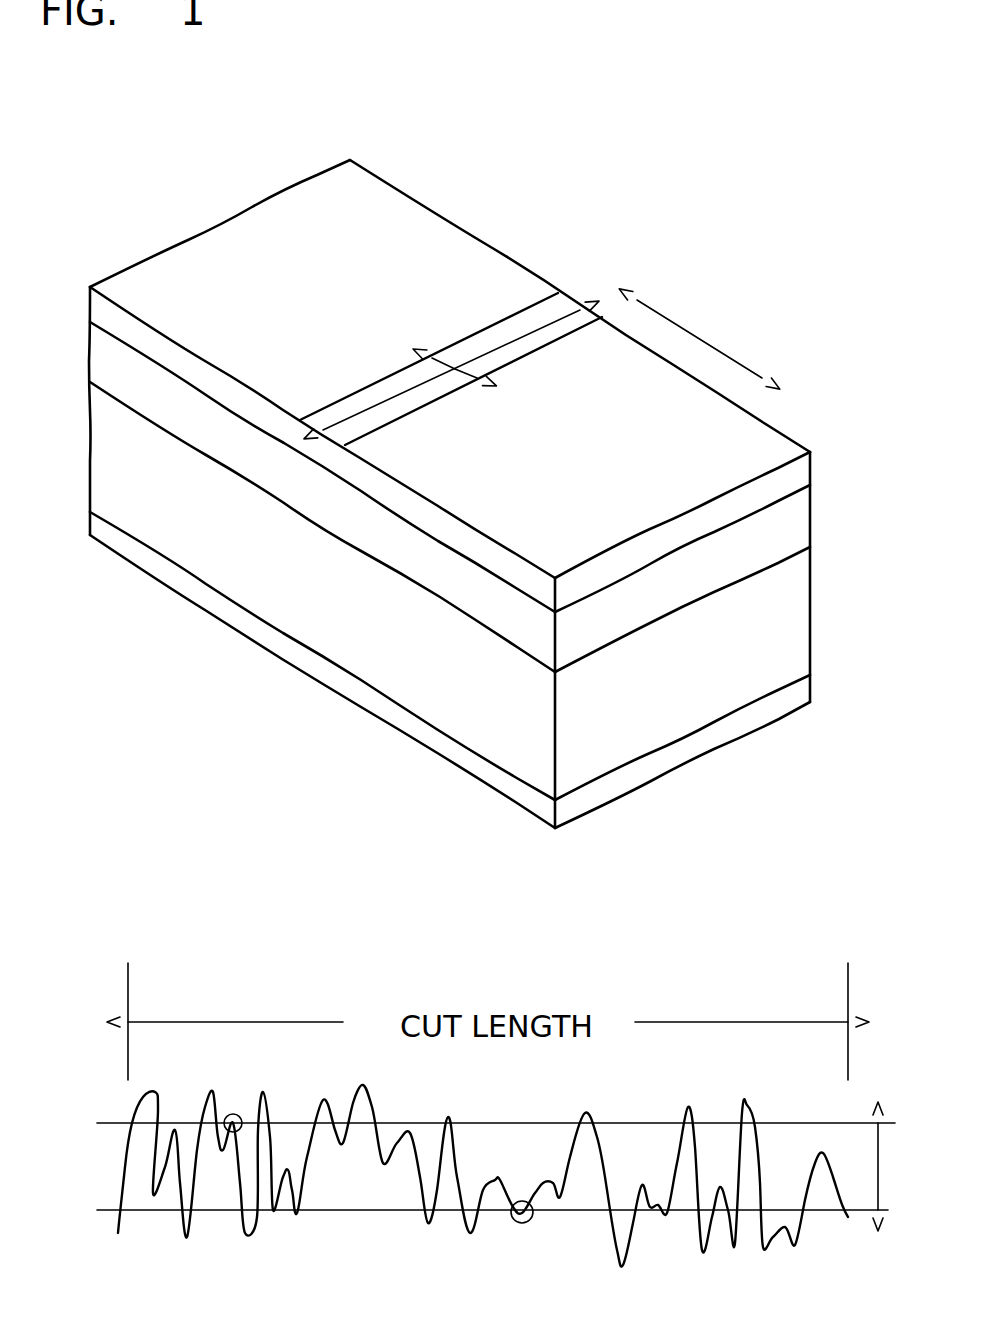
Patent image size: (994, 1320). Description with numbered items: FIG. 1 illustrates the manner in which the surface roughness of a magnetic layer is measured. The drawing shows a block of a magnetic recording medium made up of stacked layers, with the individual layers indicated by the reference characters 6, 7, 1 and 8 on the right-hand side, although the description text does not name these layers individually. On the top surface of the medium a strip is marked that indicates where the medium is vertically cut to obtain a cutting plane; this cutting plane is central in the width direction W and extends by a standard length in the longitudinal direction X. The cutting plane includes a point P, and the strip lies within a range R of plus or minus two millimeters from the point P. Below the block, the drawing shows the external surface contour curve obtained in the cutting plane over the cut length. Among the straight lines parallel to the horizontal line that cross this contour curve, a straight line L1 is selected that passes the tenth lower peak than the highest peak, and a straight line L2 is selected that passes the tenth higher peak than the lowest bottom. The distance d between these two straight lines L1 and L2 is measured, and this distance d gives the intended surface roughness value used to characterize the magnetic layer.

The substrate 1 is at (804, 613).
The top layer 6 is at (803, 475).
The intermediate layer 7 is at (802, 525).
The back layer 8 is at (803, 697).
The point P is at (455, 376).
The width direction W is at (538, 342).
The range of plus or minus two millimeters from point P R is at (455, 376).
The longitudinal direction X is at (680, 323).
The straight line passing the tenth lower peak than the highest peak L1 is at (848, 1123).
The straight line passing the tenth higher peak than the lowest bottom L2 is at (863, 1210).
The distance between lines L1 and L2 d is at (878, 1168).